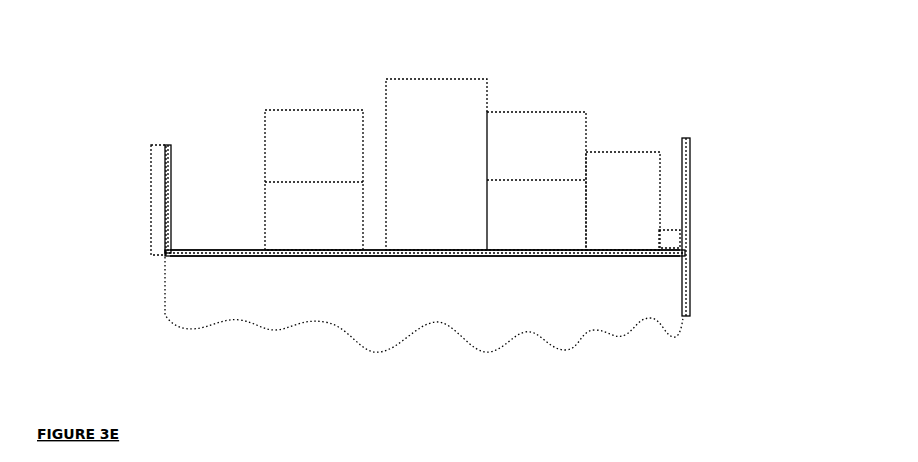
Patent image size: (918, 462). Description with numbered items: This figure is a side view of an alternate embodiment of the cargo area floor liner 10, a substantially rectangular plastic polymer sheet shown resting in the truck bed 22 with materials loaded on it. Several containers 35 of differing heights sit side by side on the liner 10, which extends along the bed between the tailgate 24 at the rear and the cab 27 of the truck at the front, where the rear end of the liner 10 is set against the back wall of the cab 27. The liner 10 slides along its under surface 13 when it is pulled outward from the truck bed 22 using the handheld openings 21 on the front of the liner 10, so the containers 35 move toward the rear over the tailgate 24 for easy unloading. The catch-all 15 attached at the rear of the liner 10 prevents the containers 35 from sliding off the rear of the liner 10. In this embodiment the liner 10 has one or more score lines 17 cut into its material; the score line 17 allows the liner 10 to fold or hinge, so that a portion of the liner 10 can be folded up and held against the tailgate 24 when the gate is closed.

The cargo area floor liner 10 is at (453, 256).
The under surface 13 is at (517, 260).
The catch-all 15 is at (666, 237).
The score lines 17 is at (165, 255).
The handheld openings 21 is at (168, 150).
The truck bed 22 is at (423, 256).
The tailgate 24 is at (153, 220).
The cab 27 is at (690, 234).
The containers 35 is at (462, 164).